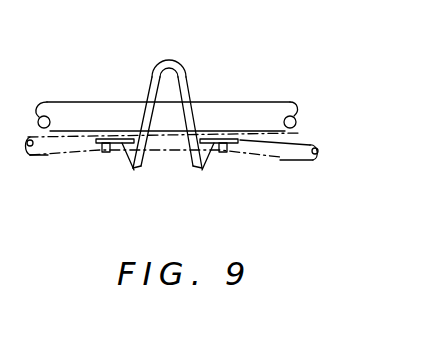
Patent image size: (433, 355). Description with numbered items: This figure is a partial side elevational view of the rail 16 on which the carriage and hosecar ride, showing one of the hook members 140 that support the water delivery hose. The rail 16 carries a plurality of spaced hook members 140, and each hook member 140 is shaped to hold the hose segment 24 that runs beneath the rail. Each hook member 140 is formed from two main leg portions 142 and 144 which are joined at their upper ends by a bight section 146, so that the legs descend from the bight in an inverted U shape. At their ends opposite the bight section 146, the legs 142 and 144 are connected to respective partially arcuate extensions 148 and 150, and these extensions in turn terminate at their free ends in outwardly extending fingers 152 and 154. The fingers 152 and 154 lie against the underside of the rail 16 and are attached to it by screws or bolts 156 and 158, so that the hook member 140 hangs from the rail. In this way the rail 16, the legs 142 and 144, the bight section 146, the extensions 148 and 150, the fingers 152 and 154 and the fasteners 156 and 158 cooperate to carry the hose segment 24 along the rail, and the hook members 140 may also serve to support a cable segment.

The rail 16 is at (267, 108).
The hose segment 24 is at (302, 137).
The hook member 140 is at (178, 111).
The main leg portion 142 is at (132, 138).
The main leg portion 144 is at (225, 135).
The bight section 146 is at (173, 63).
The partially arcuate extension 148 is at (128, 153).
The partially arcuate extension 150 is at (205, 150).
The outwardly extending finger 152 is at (98, 143).
The outwardly extending finger 154 is at (220, 138).
The screw or bolt 156 is at (111, 147).
The screw or bolt 158 is at (222, 145).